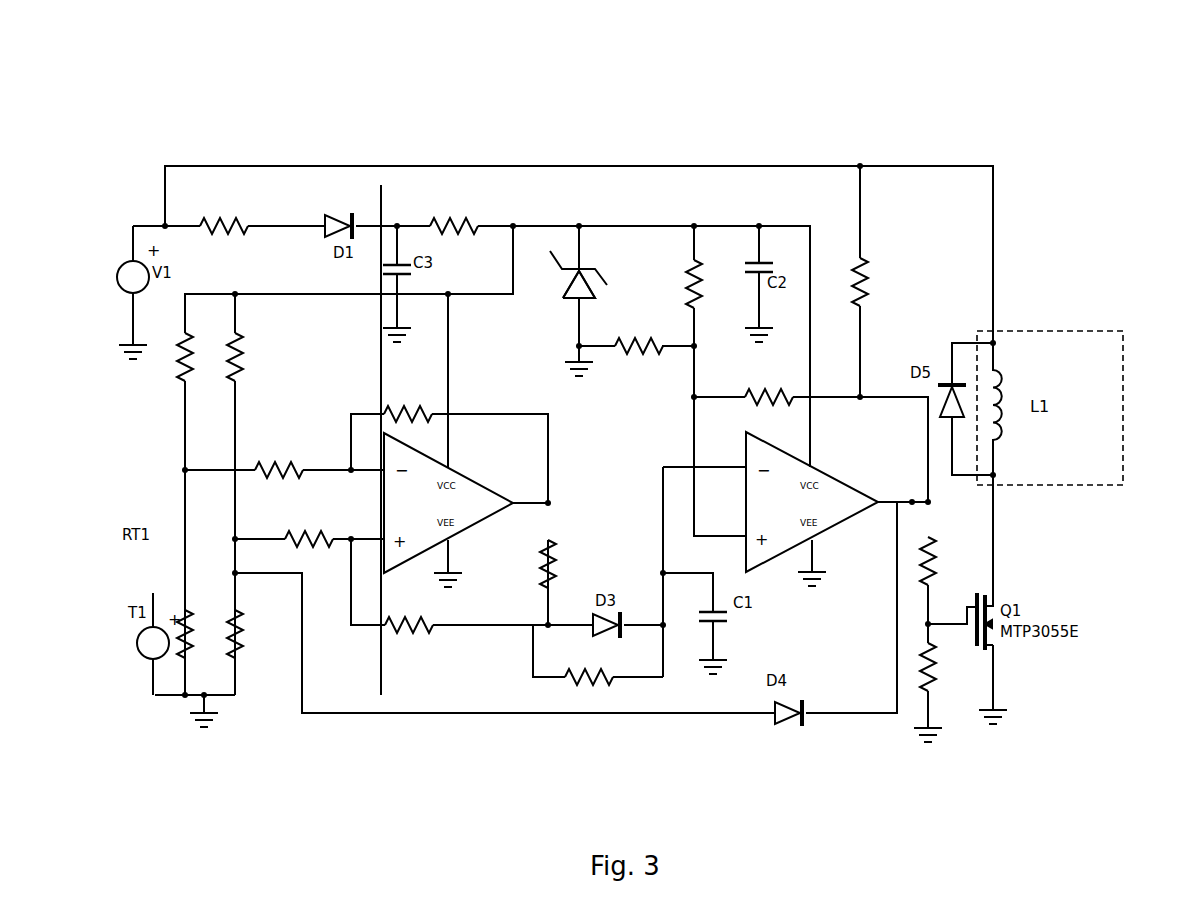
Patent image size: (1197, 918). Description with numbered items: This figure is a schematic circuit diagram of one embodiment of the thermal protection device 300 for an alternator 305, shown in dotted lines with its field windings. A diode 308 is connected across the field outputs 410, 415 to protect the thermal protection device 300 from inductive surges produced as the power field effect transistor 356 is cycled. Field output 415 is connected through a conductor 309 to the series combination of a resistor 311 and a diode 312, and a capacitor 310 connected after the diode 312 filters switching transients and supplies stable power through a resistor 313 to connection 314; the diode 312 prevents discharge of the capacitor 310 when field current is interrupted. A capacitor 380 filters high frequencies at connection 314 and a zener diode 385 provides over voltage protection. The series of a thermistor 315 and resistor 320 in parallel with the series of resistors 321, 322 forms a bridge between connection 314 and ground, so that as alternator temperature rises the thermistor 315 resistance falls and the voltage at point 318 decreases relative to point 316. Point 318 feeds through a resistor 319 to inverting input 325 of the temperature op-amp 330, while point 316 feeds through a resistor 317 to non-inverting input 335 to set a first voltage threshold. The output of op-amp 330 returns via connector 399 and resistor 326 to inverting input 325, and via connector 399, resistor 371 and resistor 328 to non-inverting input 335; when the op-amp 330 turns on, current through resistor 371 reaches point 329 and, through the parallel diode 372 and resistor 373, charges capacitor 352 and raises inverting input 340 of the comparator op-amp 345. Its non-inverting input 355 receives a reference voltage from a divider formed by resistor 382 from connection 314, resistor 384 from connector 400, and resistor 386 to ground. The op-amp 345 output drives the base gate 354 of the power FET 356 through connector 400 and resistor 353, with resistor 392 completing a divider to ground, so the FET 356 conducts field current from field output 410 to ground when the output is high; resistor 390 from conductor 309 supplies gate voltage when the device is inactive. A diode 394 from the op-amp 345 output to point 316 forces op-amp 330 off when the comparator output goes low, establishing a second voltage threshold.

The thermal protection device 300 is at (135, 110).
The alternator 305 is at (1100, 326).
The diode 308 is at (993, 330).
The conductor 309 is at (944, 358).
The capacitor 310 is at (390, 260).
The resistor 311 is at (215, 215).
The diode 312 is at (335, 215).
The resistor 313 is at (435, 212).
The connection 314 is at (514, 292).
The thermistor 315 is at (180, 662).
The point 316 is at (222, 542).
The resistor 317 is at (263, 533).
The point 318 is at (170, 472).
The resistor 319 is at (250, 440).
The resistor 320 is at (180, 334).
The resistor 321 is at (237, 330).
The resistor 322 is at (220, 663).
The inverting input 325 is at (238, 388).
The resistor 326 is at (433, 410).
The resistor 328 is at (305, 713).
The point 329 is at (533, 593).
The op-amp 330 is at (258, 470).
The non-inverting input 335 is at (377, 497).
The inverting input 340 is at (757, 460).
The op-amp 345 is at (840, 560).
The capacitor 352 is at (700, 632).
The resistor 353 is at (943, 543).
The base gate 354 is at (963, 603).
The non-inverting input 355 is at (747, 560).
The power field effect transistor 356 is at (1037, 600).
The resistor 371 is at (497, 620).
The diode 372 is at (550, 623).
The resistor 373 is at (582, 688).
The capacitor 380 is at (752, 258).
The resistor 382 is at (682, 264).
The resistor 384 is at (797, 390).
The zener diode 385 is at (568, 262).
The resistor 386 is at (625, 342).
The resistor 390 is at (862, 258).
The resistor 392 is at (953, 657).
The diode 394 is at (770, 720).
The connector 399 is at (377, 637).
The connector 400 is at (870, 567).
The field output 410 is at (1010, 468).
The field output 415 is at (1000, 344).